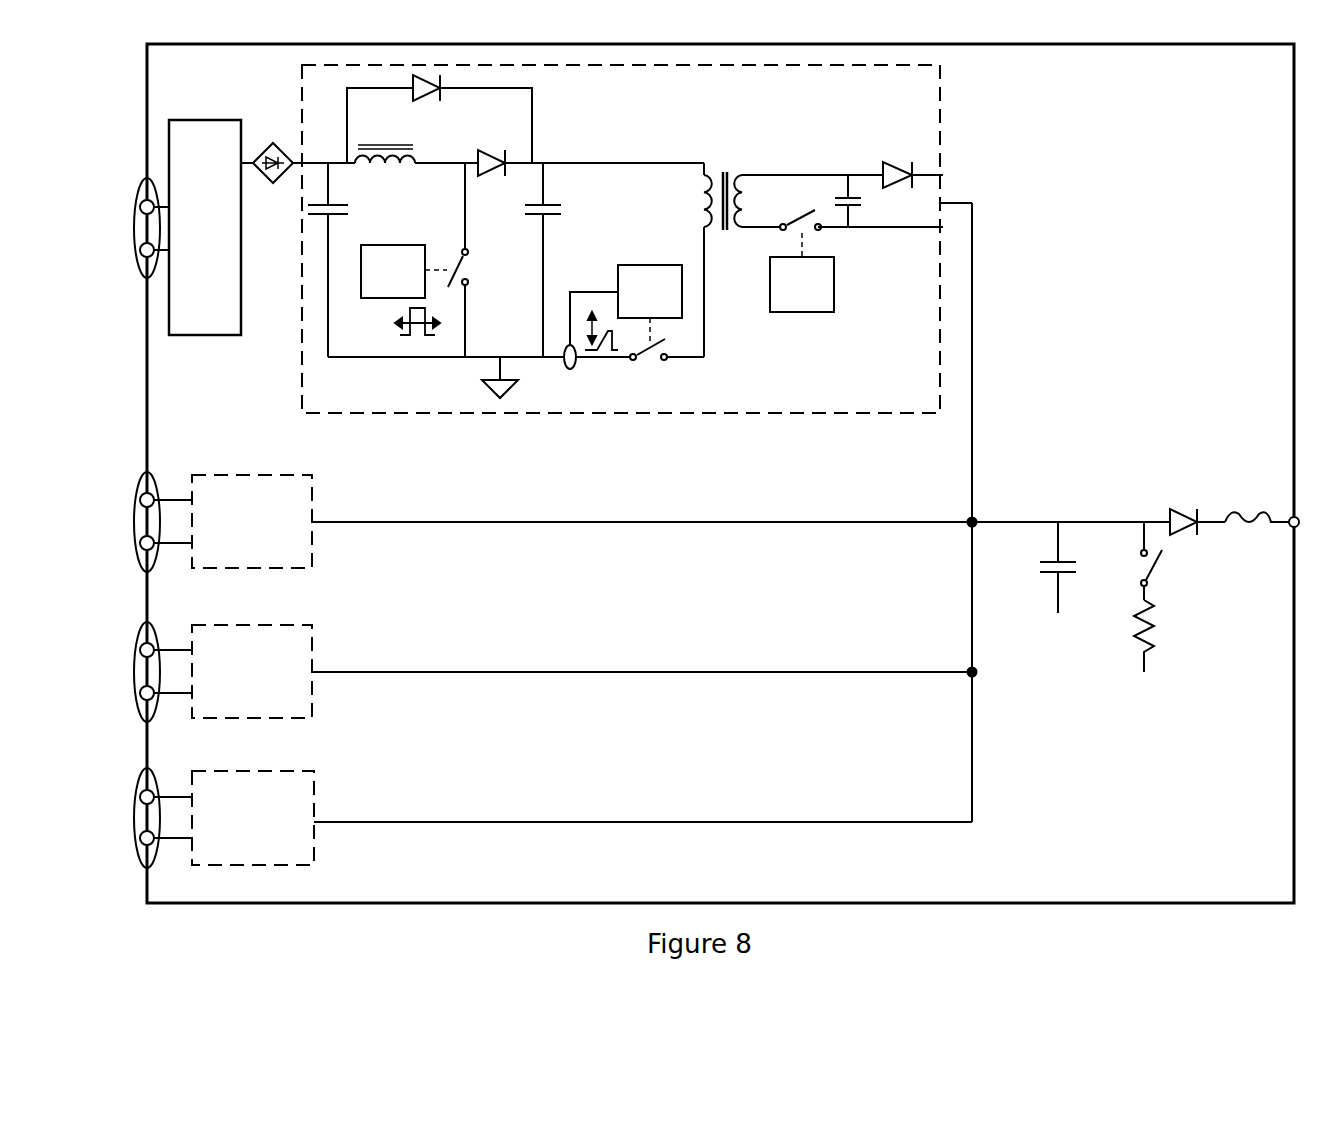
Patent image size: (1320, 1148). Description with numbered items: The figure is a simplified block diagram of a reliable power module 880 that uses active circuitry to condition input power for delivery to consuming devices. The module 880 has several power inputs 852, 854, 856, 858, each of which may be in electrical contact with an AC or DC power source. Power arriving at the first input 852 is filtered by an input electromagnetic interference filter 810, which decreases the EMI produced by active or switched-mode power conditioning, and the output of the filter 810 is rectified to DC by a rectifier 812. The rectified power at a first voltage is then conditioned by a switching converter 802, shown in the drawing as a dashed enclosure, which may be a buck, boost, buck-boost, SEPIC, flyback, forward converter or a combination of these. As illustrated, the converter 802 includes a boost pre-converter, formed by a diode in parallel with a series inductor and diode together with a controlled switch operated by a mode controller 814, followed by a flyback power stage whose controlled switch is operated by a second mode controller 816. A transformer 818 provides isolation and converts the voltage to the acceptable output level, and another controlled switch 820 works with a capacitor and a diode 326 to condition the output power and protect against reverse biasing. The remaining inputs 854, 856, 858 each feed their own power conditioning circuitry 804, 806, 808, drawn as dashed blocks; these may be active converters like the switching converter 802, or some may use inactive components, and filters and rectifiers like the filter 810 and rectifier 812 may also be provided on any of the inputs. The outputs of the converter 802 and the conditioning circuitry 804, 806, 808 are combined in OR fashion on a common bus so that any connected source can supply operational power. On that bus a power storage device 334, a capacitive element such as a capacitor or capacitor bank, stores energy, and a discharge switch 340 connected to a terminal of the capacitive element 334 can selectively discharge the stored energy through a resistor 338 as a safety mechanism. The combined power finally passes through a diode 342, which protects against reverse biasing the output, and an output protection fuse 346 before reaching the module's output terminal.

The switching converter 802 is at (940, 100).
The power conditioning circuitry 804 is at (313, 501).
The power conditioning circuitry 806 is at (313, 651).
The power conditioning circuitry 808 is at (315, 797).
The input EMI filter 810 is at (219, 338).
The rectifier 812 is at (264, 142).
The mode controller 814 is at (402, 243).
The mode controller 816 is at (660, 265).
The transformer 818 is at (723, 175).
The controlled switch 820 is at (800, 312).
The diode 326 is at (895, 165).
The power storage device 334 is at (1070, 576).
The resistor 338 is at (1135, 650).
The discharge switch 340 is at (1155, 570).
The diode 342 is at (1185, 515).
The output protection fuse 346 is at (1250, 516).
The power input 852 is at (146, 179).
The power input 854 is at (146, 474).
The power input 856 is at (146, 624).
The power input 858 is at (146, 770).
The reliable power module 880 is at (390, 904).